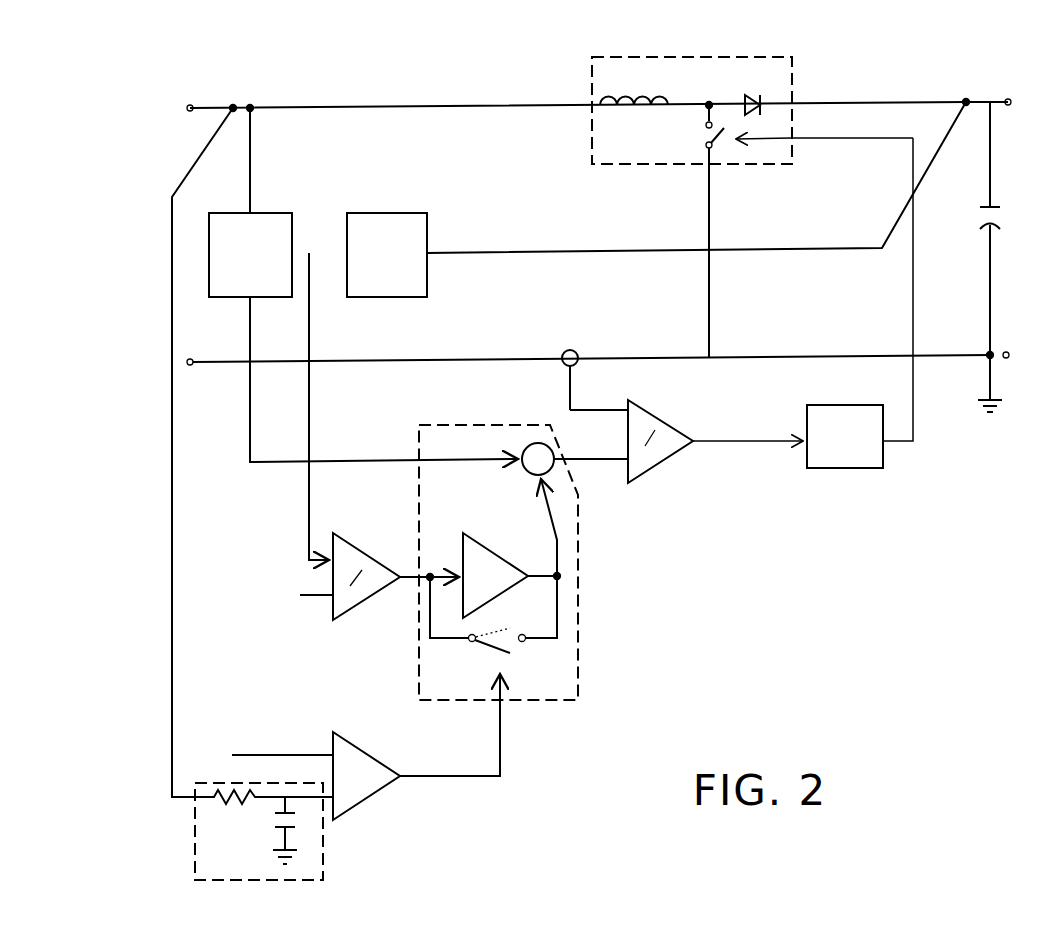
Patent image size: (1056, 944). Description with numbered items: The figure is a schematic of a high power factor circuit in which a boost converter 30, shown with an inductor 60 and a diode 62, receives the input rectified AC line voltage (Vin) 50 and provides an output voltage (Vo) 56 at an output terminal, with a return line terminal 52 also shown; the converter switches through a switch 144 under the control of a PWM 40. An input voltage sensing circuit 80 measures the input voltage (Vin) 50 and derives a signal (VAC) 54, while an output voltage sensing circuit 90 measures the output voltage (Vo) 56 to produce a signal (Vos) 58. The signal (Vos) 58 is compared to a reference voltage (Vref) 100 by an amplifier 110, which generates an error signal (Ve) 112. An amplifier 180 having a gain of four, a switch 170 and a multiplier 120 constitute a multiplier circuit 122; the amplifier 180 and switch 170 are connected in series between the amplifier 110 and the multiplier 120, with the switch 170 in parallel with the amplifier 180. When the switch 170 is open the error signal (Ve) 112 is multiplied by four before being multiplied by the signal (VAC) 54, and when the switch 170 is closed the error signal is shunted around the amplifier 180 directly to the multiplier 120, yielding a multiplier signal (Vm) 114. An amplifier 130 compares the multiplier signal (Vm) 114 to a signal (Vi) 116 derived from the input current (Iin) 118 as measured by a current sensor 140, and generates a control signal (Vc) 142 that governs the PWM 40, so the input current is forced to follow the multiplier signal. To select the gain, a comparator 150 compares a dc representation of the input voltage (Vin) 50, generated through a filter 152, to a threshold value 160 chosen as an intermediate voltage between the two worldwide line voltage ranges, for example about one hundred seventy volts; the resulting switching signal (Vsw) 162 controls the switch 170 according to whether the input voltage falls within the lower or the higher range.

The boost converter 30 is at (792, 57).
The pulse width modulator (PWM) 40 is at (885, 462).
The input voltage (Vin) 50 is at (205, 93).
The return line 52 is at (190, 370).
The signal (VAC) 54 is at (385, 468).
The output voltage (Vo) 56 is at (1018, 90).
The signal (Vos) 58 is at (280, 512).
The inductor 60 is at (618, 107).
The diode 62 is at (767, 95).
The input voltage sensing circuit 80 is at (262, 213).
The output voltage sensing circuit 90 is at (427, 225).
The reference voltage (Vref) 100 is at (297, 610).
The amplifier 110 is at (385, 592).
The error signal (Ve) 112 is at (405, 590).
The multiplier signal (Vm) 114 is at (612, 468).
The current signal input Vi 116 is at (590, 420).
The input current (Iin) 118 is at (557, 322).
The multiplier 120 is at (520, 446).
The multiplier circuit 122 is at (588, 517).
The amplifier 130 is at (655, 472).
The current sensor 140 is at (580, 366).
The control signal (Vc) 142 is at (743, 410).
The switch 144 is at (716, 143).
The comparator 150 is at (358, 805).
The filter 152 is at (323, 862).
The threshold value 160 is at (232, 752).
The switching signal (Vsw) 162 is at (445, 778).
The switch 170 is at (520, 655).
The amplifier 180 is at (488, 540).